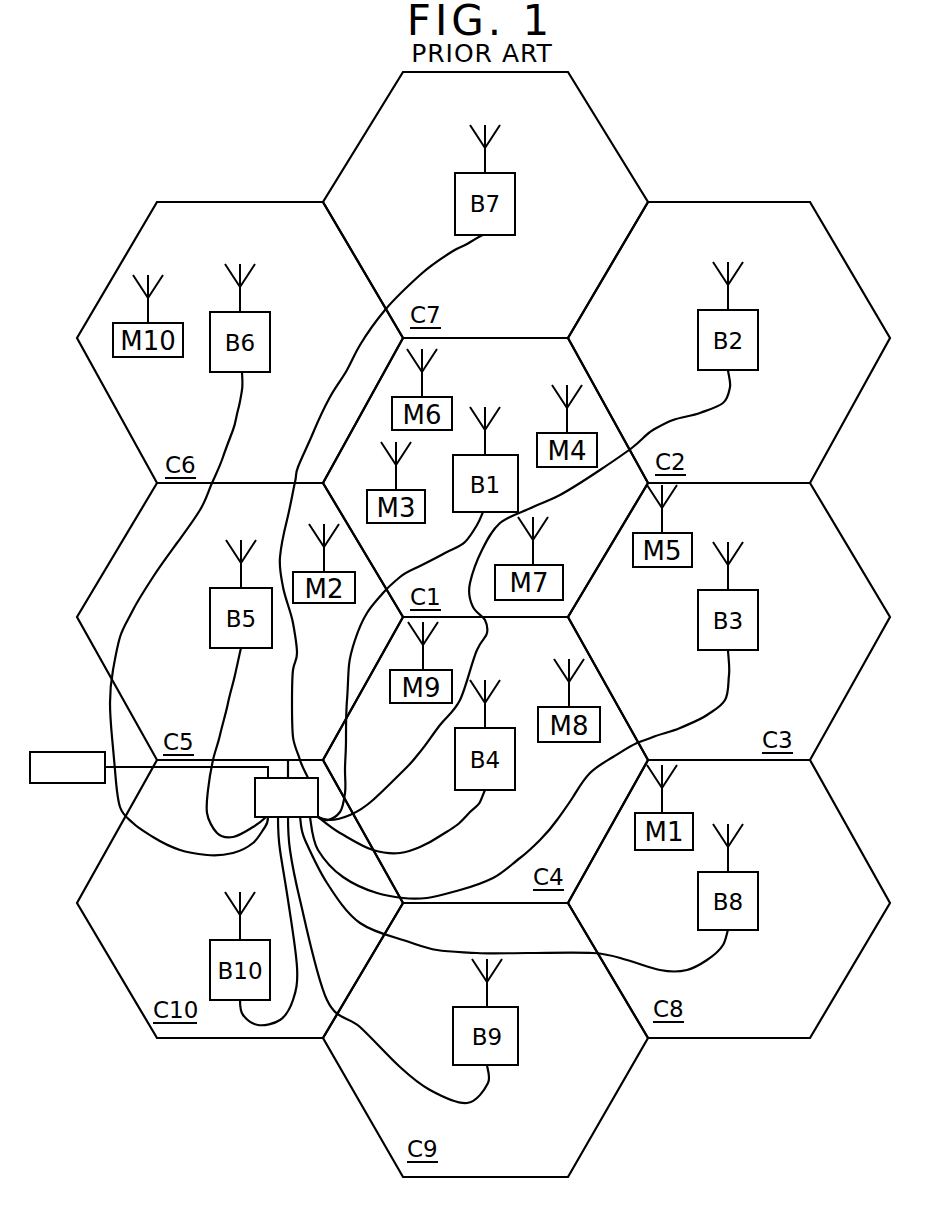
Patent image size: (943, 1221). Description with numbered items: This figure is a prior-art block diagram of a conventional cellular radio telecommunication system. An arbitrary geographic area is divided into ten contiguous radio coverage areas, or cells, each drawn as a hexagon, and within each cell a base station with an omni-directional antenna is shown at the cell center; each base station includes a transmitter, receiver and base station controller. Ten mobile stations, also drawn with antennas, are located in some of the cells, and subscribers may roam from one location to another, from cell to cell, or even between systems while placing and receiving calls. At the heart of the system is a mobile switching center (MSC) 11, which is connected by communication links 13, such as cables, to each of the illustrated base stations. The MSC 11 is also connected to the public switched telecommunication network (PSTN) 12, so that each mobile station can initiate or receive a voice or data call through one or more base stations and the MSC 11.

The mobile switching center (MSC) 11 is at (255, 798).
The public switched telecommunication network (PSTN) 12 is at (68, 783).
The communication links 13 is at (292, 703).